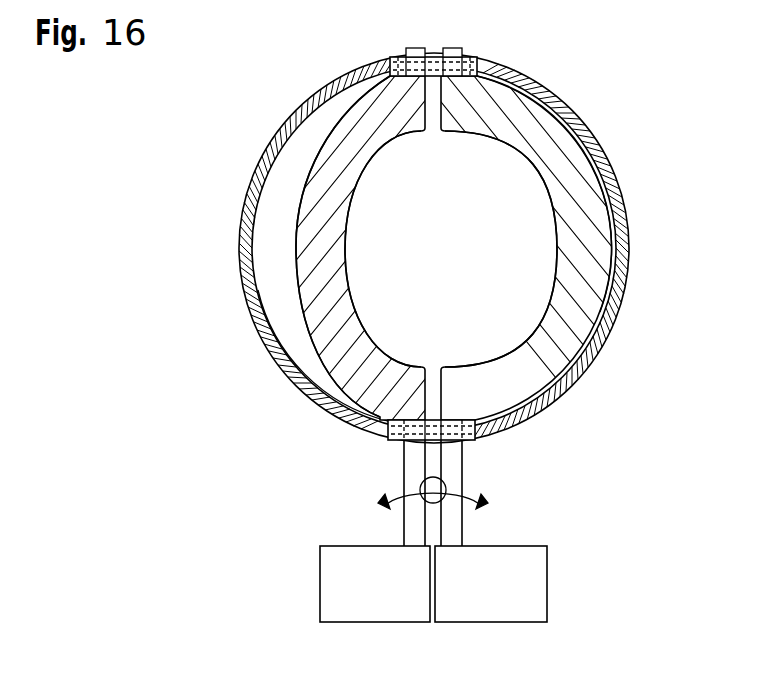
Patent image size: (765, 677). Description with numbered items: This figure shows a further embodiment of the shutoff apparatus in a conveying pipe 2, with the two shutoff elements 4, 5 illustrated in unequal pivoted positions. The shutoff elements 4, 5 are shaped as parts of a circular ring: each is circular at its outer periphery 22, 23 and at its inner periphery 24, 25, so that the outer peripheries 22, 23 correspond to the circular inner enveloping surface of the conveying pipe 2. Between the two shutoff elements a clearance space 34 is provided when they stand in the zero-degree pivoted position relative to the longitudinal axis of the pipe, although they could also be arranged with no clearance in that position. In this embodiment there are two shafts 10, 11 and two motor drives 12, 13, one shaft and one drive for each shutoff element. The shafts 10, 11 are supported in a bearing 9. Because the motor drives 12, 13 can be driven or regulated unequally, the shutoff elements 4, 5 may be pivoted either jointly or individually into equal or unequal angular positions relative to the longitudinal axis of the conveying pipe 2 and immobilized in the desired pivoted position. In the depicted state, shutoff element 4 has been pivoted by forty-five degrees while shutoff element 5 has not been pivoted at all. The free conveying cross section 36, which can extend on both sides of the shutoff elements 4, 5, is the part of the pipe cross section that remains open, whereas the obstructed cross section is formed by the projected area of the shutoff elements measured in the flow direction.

The conveying pipe 2 is at (272, 362).
The shutoff element 4 is at (320, 298).
The shutoff element 5 is at (618, 278).
The bearing 9 is at (480, 438).
The shaft 10 is at (415, 521).
The shaft 11 is at (453, 528).
The motor drive 12 is at (328, 582).
The motor drive 13 is at (538, 586).
The outer periphery 22 is at (312, 163).
The outer periphery 23 is at (600, 312).
The inner periphery 24 is at (367, 323).
The inner periphery 25 is at (553, 228).
The clearance space 34 is at (433, 100).
The free conveying cross section 36 is at (577, 370).